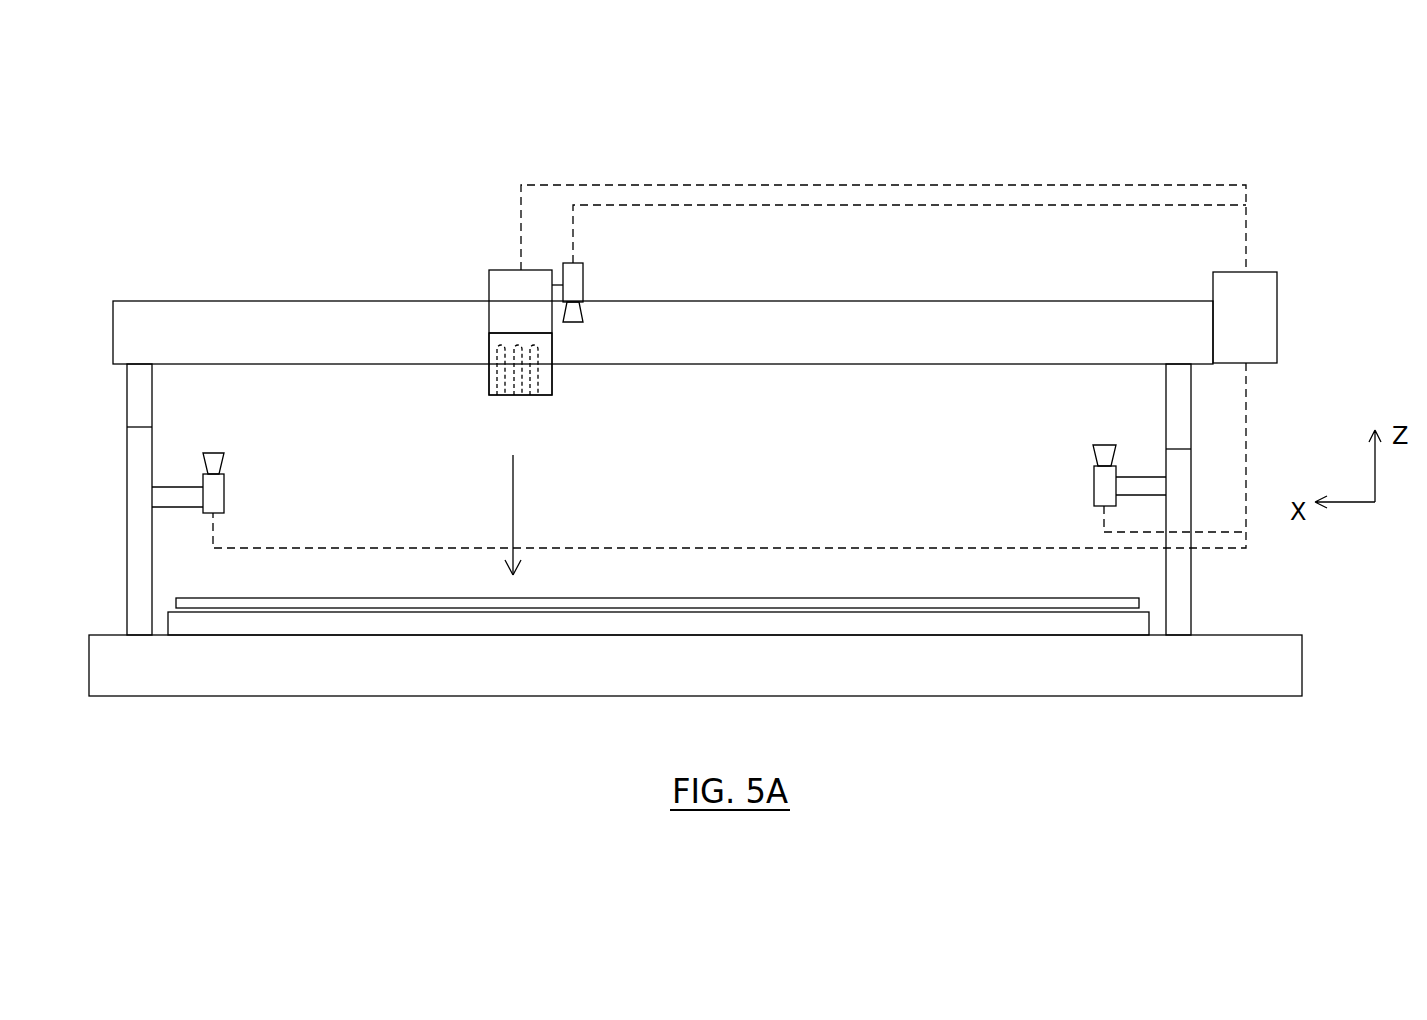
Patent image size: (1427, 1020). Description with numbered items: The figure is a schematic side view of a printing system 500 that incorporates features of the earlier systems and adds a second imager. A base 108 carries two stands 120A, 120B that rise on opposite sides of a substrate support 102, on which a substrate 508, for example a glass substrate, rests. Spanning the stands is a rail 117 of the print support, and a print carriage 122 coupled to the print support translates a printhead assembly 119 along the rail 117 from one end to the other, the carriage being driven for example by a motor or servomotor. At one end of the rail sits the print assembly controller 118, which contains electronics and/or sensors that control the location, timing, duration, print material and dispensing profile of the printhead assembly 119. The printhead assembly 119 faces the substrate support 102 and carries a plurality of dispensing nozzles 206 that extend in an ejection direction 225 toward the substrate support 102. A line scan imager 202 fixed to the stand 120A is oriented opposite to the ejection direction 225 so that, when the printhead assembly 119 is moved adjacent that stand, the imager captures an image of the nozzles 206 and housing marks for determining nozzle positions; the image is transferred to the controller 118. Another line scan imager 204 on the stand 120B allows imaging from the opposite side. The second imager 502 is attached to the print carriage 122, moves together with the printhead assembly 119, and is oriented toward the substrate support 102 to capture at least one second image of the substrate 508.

The printing system 500 is at (1238, 96).
The base 108 is at (1278, 645).
The rail 117 is at (163, 307).
The print assembly controller 118 is at (1265, 315).
The stand 120A is at (1180, 410).
The stand 120B is at (137, 512).
The print carriage 122 is at (489, 276).
The printhead assembly 119 is at (489, 386).
The dispensing nozzles 206 is at (533, 395).
The second imager 502 is at (577, 288).
The line scan imager 204 is at (215, 493).
The line scan imager 202 is at (1100, 486).
The substrate 508 is at (838, 603).
The substrate support 102 is at (300, 620).
The ejection direction 225 is at (539, 515).